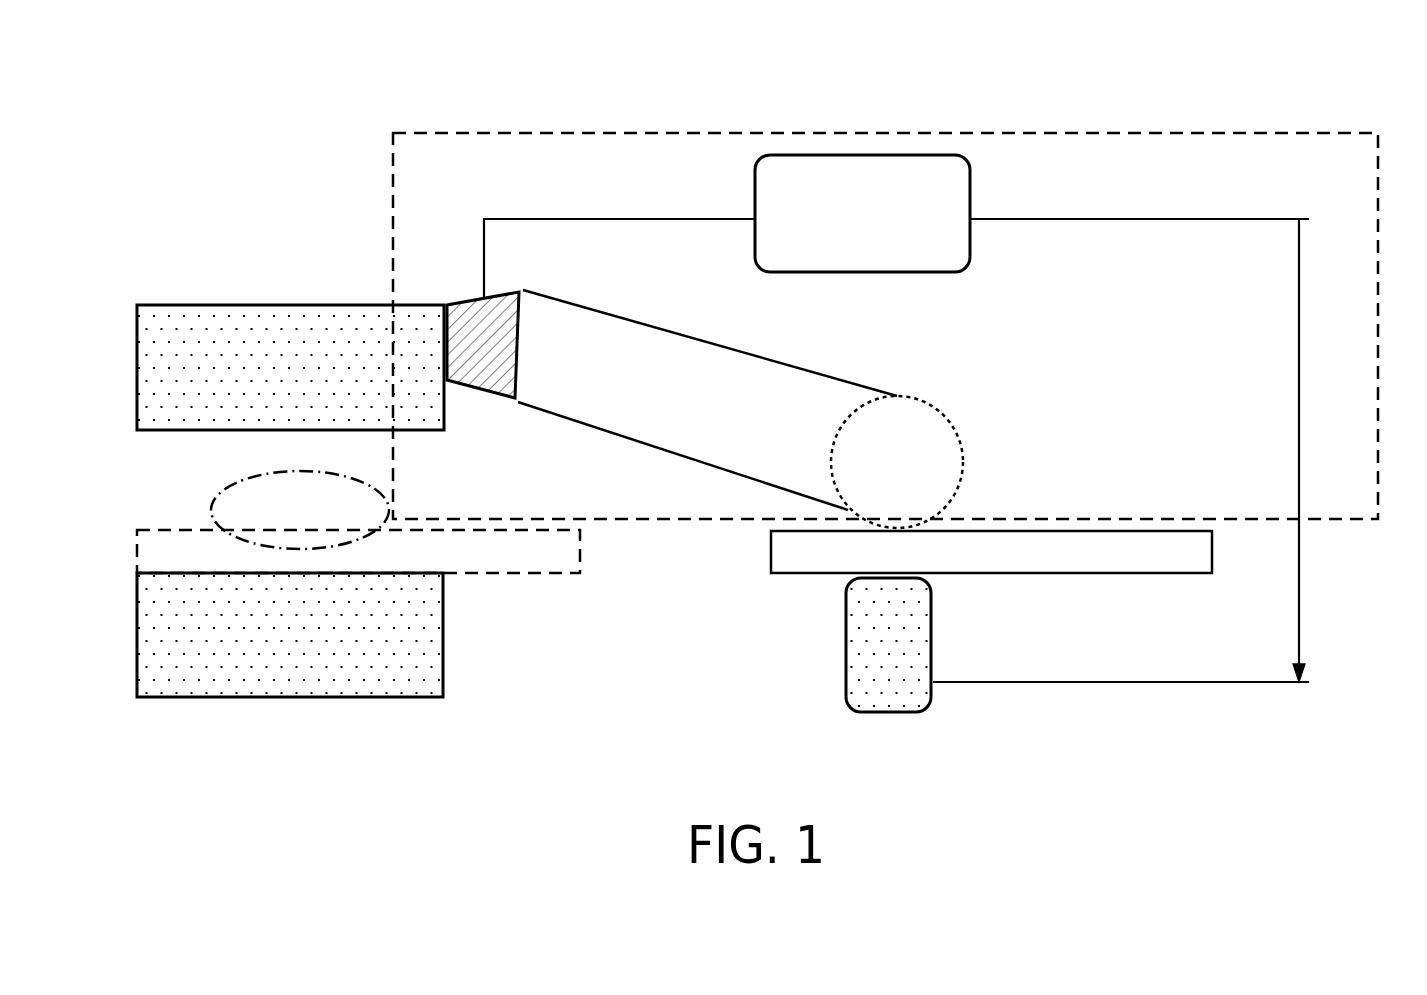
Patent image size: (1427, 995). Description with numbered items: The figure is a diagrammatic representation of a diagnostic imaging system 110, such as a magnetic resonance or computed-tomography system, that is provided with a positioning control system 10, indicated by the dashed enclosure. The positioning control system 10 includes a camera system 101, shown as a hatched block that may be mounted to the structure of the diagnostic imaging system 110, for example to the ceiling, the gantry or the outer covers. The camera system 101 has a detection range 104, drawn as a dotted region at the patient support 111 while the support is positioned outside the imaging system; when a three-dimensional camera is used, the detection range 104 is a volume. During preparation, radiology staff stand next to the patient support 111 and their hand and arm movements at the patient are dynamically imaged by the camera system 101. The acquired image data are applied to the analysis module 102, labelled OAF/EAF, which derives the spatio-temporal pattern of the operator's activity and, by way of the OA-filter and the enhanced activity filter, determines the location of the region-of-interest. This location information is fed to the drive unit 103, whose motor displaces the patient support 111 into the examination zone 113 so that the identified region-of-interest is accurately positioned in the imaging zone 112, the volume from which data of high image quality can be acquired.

The positioning control system 10 is at (1341, 119).
The camera system 101 is at (515, 373).
The analysis module 102 is at (970, 197).
The drive unit 103 is at (885, 712).
The detection range 104 is at (963, 462).
The diagnostic imaging system 110 is at (285, 303).
The patient support 111 is at (1083, 573).
The imaging zone 112 is at (273, 697).
The examination zone 113 is at (225, 492).